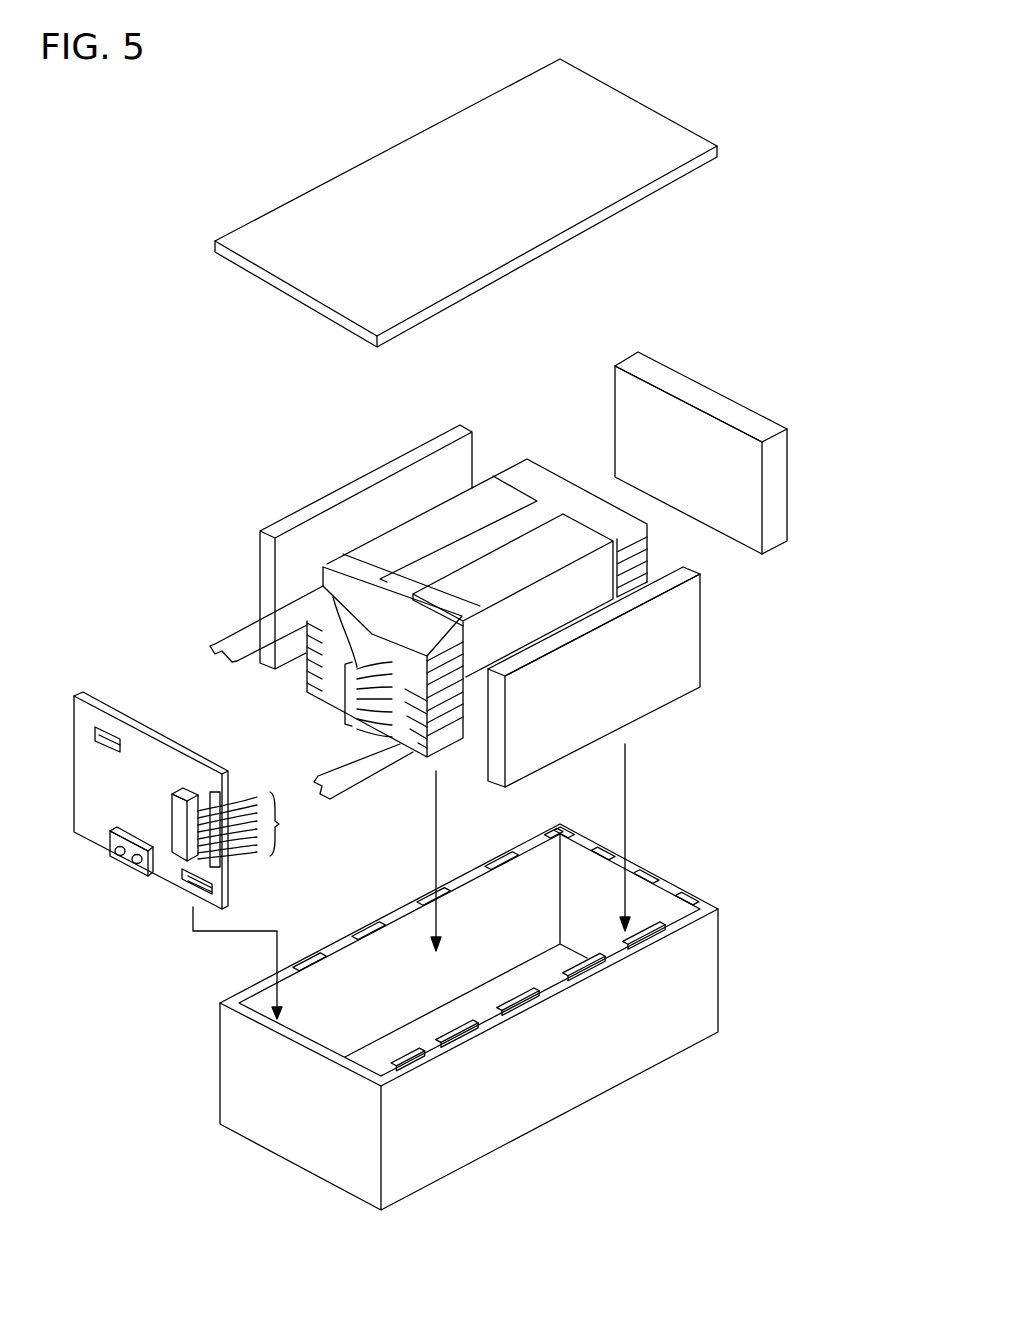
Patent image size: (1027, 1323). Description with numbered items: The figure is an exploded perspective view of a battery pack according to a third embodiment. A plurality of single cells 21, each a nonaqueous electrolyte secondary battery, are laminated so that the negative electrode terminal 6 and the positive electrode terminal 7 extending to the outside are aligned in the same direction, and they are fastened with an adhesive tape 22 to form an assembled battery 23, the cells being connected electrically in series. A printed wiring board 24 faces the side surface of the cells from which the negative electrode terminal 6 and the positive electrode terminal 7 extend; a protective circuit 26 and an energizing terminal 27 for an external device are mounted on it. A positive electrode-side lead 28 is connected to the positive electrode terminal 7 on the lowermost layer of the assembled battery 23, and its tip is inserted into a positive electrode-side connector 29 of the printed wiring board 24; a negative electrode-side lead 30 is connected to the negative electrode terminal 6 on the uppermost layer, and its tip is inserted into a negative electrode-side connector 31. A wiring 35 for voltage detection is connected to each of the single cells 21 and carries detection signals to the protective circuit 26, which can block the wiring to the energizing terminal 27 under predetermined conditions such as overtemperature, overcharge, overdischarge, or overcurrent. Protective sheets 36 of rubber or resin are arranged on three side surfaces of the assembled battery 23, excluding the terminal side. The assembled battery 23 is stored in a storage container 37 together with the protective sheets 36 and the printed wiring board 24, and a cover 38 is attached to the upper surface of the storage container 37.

The cover 38 is at (658, 138).
The protective sheet 36 is at (328, 503).
The assembled battery 23 is at (424, 516).
The adhesive tape 22 is at (553, 547).
The positive electrode terminal 7 is at (400, 638).
The single cell 21 is at (655, 578).
The negative electrode terminal 6 is at (310, 585).
The negative electrode-side lead 30 is at (232, 634).
The positive electrode-side lead 28 is at (353, 783).
The wiring for voltage detection 35 is at (343, 695).
The printed wiring board 24 is at (109, 696).
The negative electrode-side connector 31 is at (113, 745).
The protective circuit 26 is at (185, 797).
The energizing terminal for an external device 27 is at (127, 868).
The positive electrode-side connector 29 is at (232, 893).
The storage container 37 is at (707, 980).